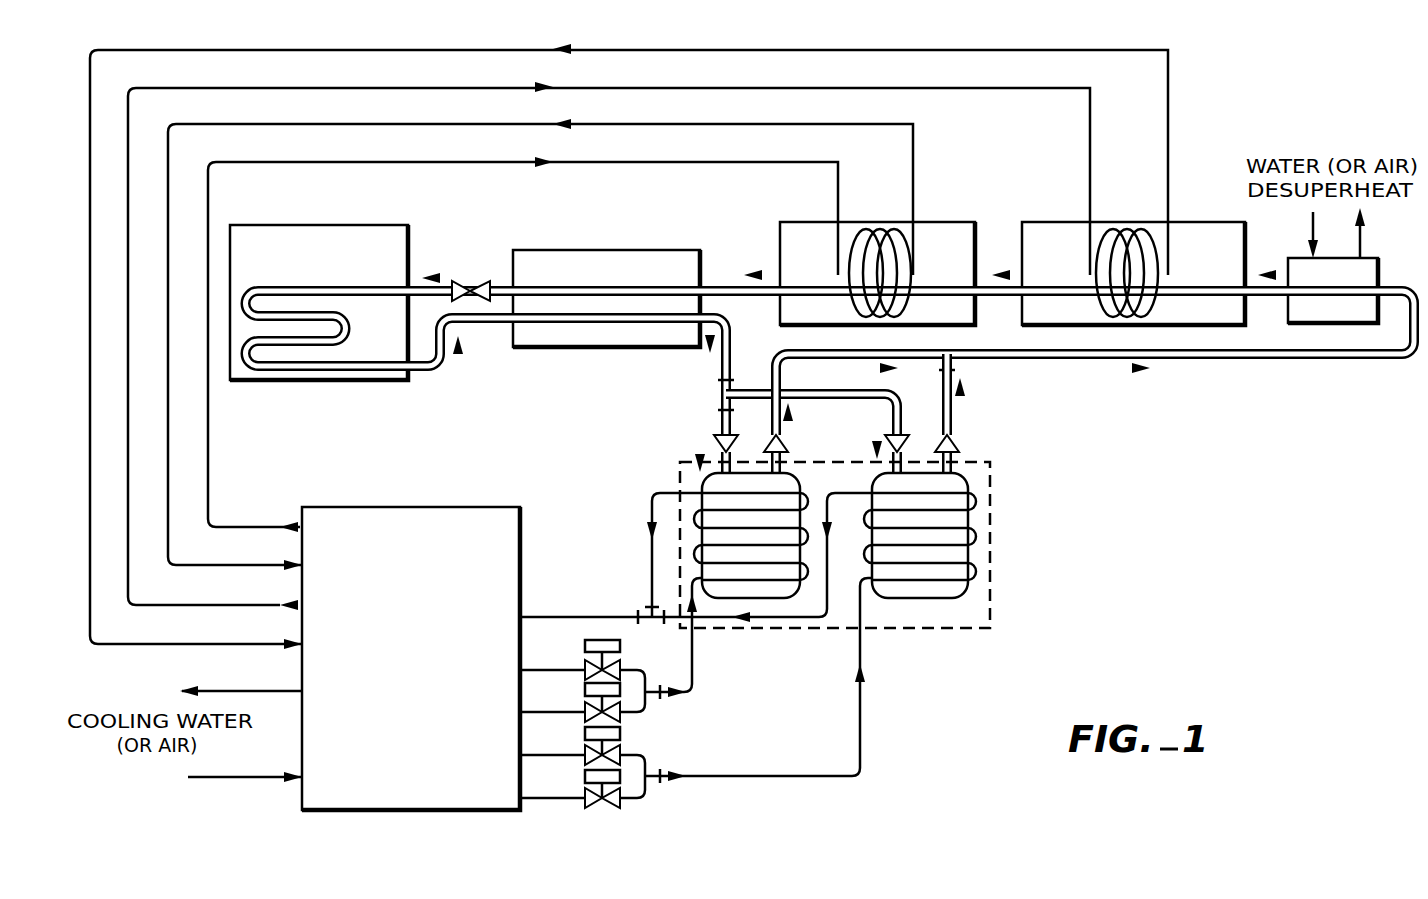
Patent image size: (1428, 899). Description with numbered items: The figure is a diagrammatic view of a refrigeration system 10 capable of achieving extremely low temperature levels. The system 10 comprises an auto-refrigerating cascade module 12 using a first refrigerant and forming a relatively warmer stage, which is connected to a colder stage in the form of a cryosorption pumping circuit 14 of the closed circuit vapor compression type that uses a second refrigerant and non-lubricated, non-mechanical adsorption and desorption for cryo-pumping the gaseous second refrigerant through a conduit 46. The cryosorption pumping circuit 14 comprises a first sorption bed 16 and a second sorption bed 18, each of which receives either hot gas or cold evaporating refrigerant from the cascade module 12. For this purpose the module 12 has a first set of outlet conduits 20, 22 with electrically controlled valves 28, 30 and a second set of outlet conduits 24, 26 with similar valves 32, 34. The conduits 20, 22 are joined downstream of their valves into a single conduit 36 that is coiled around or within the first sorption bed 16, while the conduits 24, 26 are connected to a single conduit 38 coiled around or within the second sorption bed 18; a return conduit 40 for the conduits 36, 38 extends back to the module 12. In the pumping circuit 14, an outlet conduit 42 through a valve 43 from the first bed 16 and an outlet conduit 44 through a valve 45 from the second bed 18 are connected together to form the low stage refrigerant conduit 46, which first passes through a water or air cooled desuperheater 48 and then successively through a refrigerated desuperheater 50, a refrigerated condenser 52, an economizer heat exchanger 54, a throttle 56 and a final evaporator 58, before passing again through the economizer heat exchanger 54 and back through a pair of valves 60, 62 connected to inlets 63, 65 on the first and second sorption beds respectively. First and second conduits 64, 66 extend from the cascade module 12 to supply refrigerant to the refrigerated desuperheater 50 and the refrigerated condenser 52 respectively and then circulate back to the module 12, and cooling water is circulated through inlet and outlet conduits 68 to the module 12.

The refrigeration system 10 is at (1204, 520).
The auto-refrigerating cascade module 12 is at (385, 822).
The cryosorption pumping circuit 14 is at (930, 632).
The first sorption bed 16 is at (700, 486).
The second sorption bed 18 is at (974, 520).
The outlet conduit 20 is at (575, 668).
The outlet conduit 22 is at (540, 714).
The outlet conduit 24 is at (575, 753).
The outlet conduit 26 is at (560, 800).
The electrically controlled valve 28 is at (622, 645).
The electrically controlled valve 30 is at (585, 689).
The valve 32 is at (622, 733).
The valve 34 is at (585, 777).
The single conduit 36 is at (697, 662).
The single conduit 38 is at (863, 733).
The return conduit 40 is at (648, 586).
The outlet conduit 42 is at (805, 392).
The valve 43 is at (790, 441).
The outlet conduit 44 is at (957, 412).
The valve 45 is at (957, 445).
The low stage refrigerant conduit 46 is at (1236, 362).
The water or air cooled desuperheater 48 is at (1364, 258).
The refrigerated desuperheater 50 is at (1184, 224).
The refrigerated condenser 52 is at (944, 224).
The economizer heat exchanger 54 is at (658, 250).
The throttle 56 is at (470, 282).
The final evaporator 58 is at (357, 226).
The valve 60 is at (716, 438).
The valve 62 is at (890, 434).
The inlet 63 is at (720, 462).
The first conduit 64 is at (154, 605).
The inlet 65 is at (888, 468).
The second conduit 66 is at (212, 495).
The inlet and outlet conduits 68 is at (228, 690).